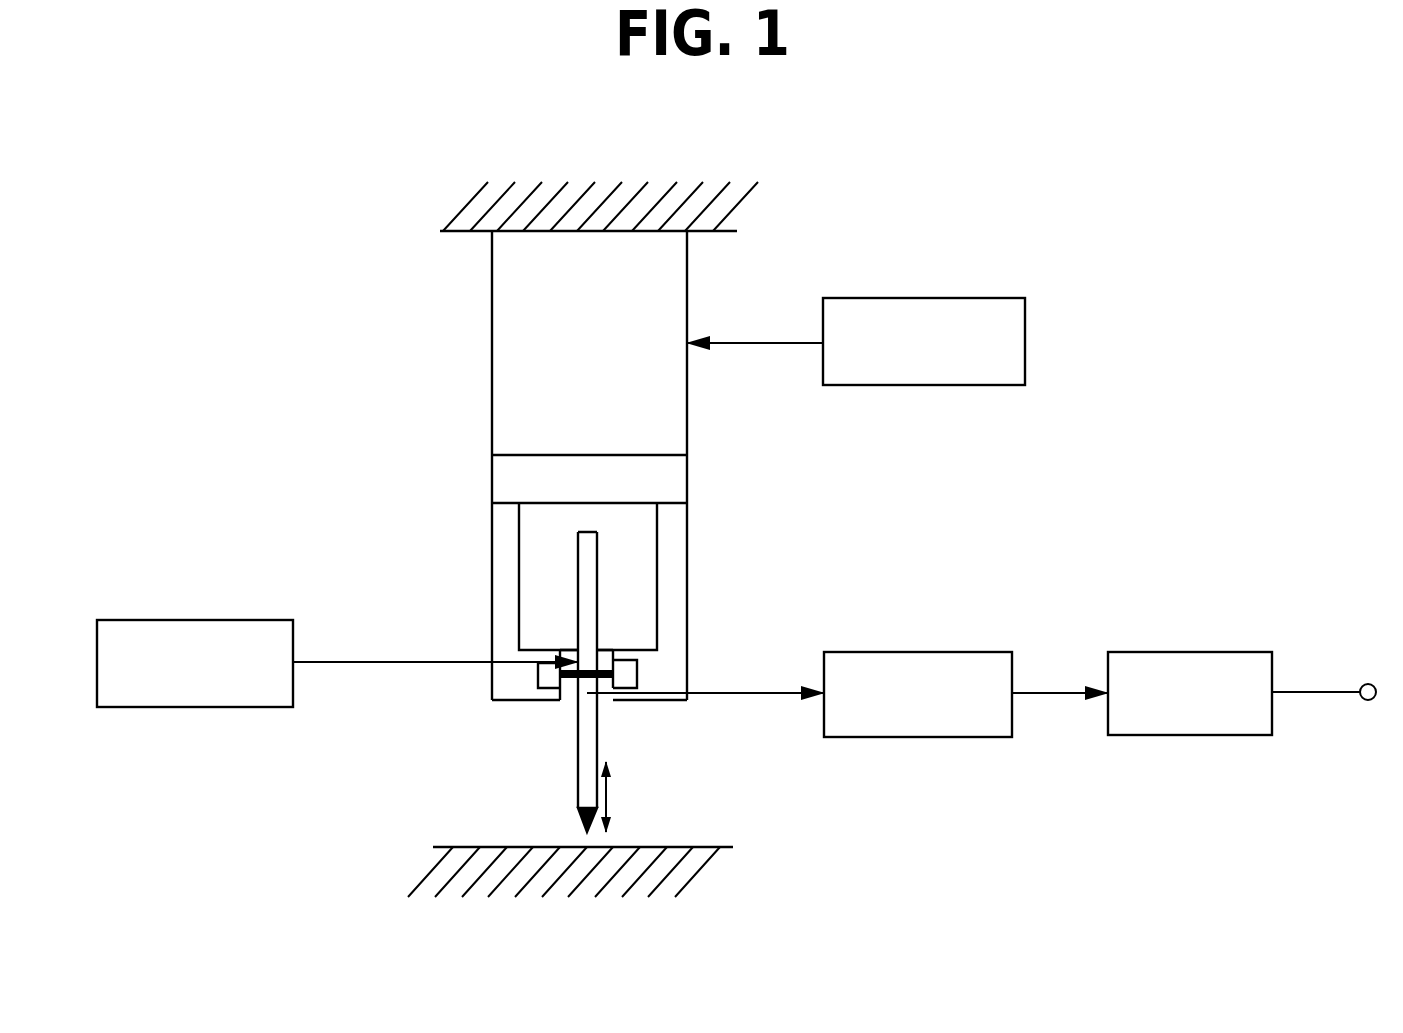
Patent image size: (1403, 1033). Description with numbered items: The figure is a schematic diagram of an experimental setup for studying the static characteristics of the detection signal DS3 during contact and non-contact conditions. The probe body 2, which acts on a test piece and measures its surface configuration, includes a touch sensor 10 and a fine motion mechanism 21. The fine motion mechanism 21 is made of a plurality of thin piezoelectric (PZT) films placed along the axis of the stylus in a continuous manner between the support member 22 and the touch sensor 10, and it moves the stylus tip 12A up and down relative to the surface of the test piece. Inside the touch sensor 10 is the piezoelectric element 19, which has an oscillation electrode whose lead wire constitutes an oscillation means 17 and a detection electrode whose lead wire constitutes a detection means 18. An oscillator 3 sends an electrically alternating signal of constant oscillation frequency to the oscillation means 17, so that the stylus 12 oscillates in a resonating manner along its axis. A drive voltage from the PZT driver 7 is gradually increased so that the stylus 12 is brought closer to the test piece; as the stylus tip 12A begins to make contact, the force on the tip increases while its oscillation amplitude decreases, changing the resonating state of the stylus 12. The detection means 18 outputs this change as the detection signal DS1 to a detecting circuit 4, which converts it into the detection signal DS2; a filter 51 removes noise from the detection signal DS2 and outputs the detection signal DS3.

The probe body 2 is at (455, 450).
The oscillator 3 is at (175, 620).
The detecting circuit 4 is at (920, 652).
The PZT driver 7 is at (944, 298).
The touch sensor 10 is at (502, 535).
The stylus 12 is at (577, 686).
The stylus tip 12A is at (585, 836).
The oscillation means 17 is at (570, 650).
The detection means 18 is at (570, 700).
The piezoelectric element 19 is at (611, 638).
The fine motion mechanism 21 is at (491, 304).
The support member 22 is at (480, 208).
The filter 51 is at (1203, 652).
The detection signal DS1 is at (770, 690).
The detection signal DS2 is at (1047, 690).
The detection signal DS3 is at (1368, 684).